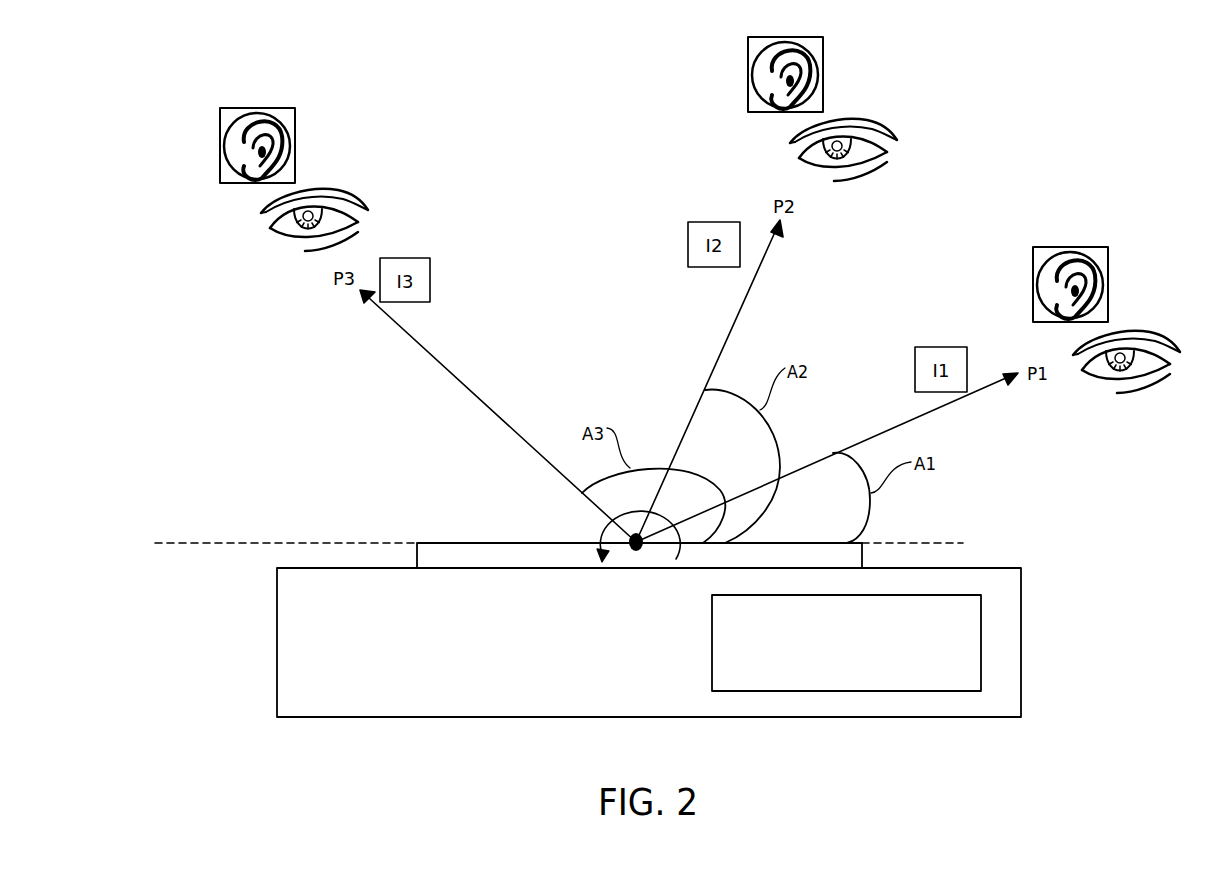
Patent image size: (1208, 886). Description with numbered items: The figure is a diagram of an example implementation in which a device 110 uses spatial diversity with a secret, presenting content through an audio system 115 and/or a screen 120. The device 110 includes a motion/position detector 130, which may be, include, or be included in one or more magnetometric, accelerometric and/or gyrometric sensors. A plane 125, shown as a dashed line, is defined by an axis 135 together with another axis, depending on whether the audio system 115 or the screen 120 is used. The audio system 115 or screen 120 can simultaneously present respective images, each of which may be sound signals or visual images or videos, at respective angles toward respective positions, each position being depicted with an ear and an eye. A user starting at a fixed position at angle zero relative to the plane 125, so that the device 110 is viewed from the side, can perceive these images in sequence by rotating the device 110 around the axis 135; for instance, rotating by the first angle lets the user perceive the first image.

The device 110 is at (649, 642).
The audio system 115 is at (800, 529).
The screen 120 is at (862, 558).
The plane 125 is at (228, 543).
The motion/position detector 130 is at (846, 643).
The axis 135 is at (627, 554).